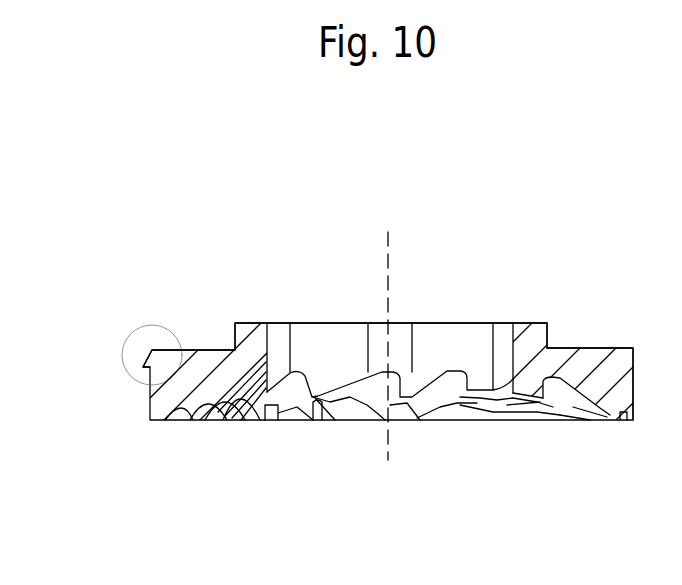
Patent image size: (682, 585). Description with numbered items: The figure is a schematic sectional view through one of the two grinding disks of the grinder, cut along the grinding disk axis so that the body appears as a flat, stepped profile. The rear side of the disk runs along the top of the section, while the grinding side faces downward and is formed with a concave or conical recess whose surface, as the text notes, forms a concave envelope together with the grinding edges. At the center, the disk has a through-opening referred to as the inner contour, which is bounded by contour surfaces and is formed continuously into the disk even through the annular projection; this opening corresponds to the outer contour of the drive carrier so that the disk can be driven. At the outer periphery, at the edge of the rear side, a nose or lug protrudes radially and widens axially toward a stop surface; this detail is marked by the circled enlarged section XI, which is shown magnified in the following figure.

The enlarged section XI is at (157, 326).